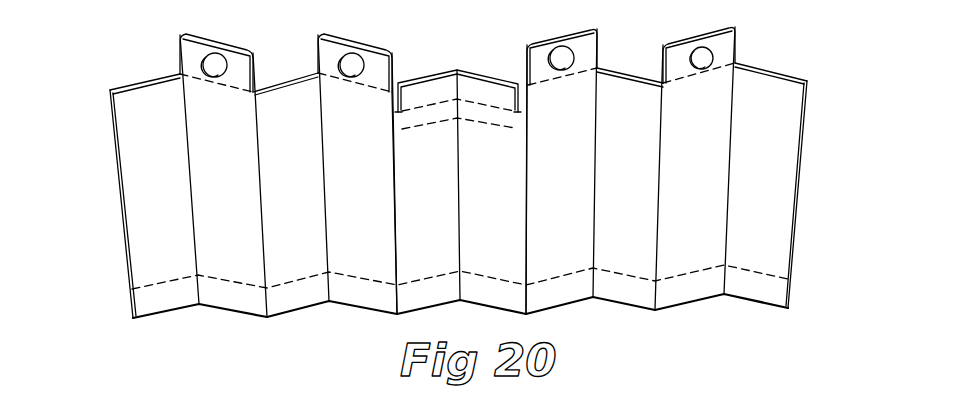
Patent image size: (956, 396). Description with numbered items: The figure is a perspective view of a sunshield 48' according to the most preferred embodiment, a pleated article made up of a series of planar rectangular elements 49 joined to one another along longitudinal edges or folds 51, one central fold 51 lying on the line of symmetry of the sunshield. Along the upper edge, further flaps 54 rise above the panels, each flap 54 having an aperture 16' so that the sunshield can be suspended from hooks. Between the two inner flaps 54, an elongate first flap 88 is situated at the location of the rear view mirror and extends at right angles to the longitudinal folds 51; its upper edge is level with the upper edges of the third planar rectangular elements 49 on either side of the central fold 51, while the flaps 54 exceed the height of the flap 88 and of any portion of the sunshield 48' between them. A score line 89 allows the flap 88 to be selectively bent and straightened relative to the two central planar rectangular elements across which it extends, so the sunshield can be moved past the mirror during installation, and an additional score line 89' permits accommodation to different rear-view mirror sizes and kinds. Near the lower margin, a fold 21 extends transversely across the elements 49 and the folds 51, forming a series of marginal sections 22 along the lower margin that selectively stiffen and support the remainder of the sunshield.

The apertures 16' is at (658, 170).
The fold 21 is at (771, 273).
The marginal sections 22 is at (232, 305).
The sunshield 48' is at (419, 199).
The planar rectangular elements 49 is at (150, 193).
The longitudinal edges or folds 51 is at (392, 200).
The flaps 54 is at (180, 58).
The flap 88 is at (462, 68).
The score line 89 is at (458, 75).
The additional score line 89' is at (458, 152).